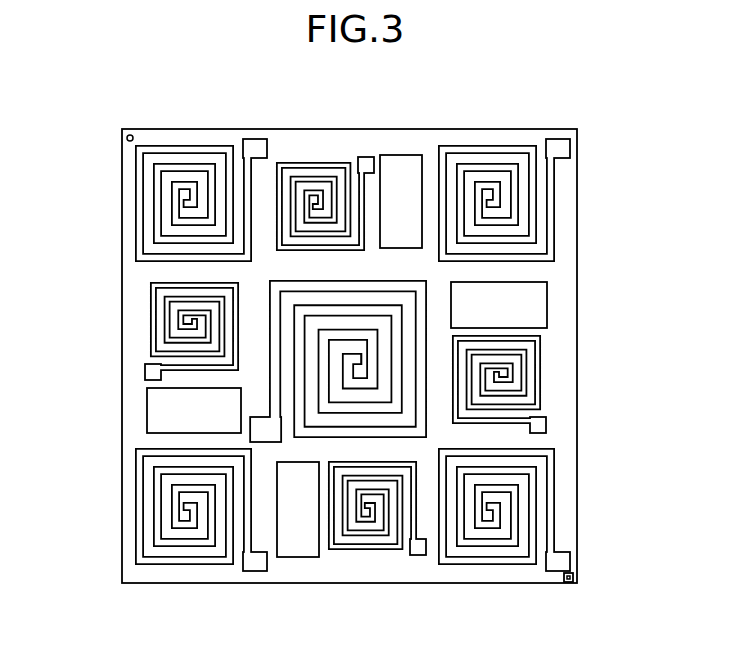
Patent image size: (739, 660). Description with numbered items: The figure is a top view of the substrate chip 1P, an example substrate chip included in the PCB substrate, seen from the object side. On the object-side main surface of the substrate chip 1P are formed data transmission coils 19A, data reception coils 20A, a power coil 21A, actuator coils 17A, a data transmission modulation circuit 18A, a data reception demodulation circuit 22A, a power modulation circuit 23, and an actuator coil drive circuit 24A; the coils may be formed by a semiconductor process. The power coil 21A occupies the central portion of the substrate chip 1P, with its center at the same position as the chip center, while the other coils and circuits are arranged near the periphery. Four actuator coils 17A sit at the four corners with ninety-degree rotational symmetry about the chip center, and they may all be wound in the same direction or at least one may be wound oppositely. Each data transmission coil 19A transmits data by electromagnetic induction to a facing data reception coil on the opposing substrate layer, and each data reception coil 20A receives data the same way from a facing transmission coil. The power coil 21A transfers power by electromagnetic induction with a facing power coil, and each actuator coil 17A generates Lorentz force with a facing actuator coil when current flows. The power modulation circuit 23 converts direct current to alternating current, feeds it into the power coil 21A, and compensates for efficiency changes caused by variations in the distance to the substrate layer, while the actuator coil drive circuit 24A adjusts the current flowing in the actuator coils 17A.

The substrate chip 1P is at (428, 145).
The actuator coil 17A is at (158, 211).
The data transmission modulation circuit 18A is at (524, 305).
The data transmission coil 19A is at (157, 322).
The data reception coil 20A is at (321, 172).
The power coil 21A is at (280, 284).
The data reception demodulation circuit 22A is at (302, 540).
The power modulation circuit 23 is at (158, 413).
The actuator coil drive circuit 24A is at (401, 166).